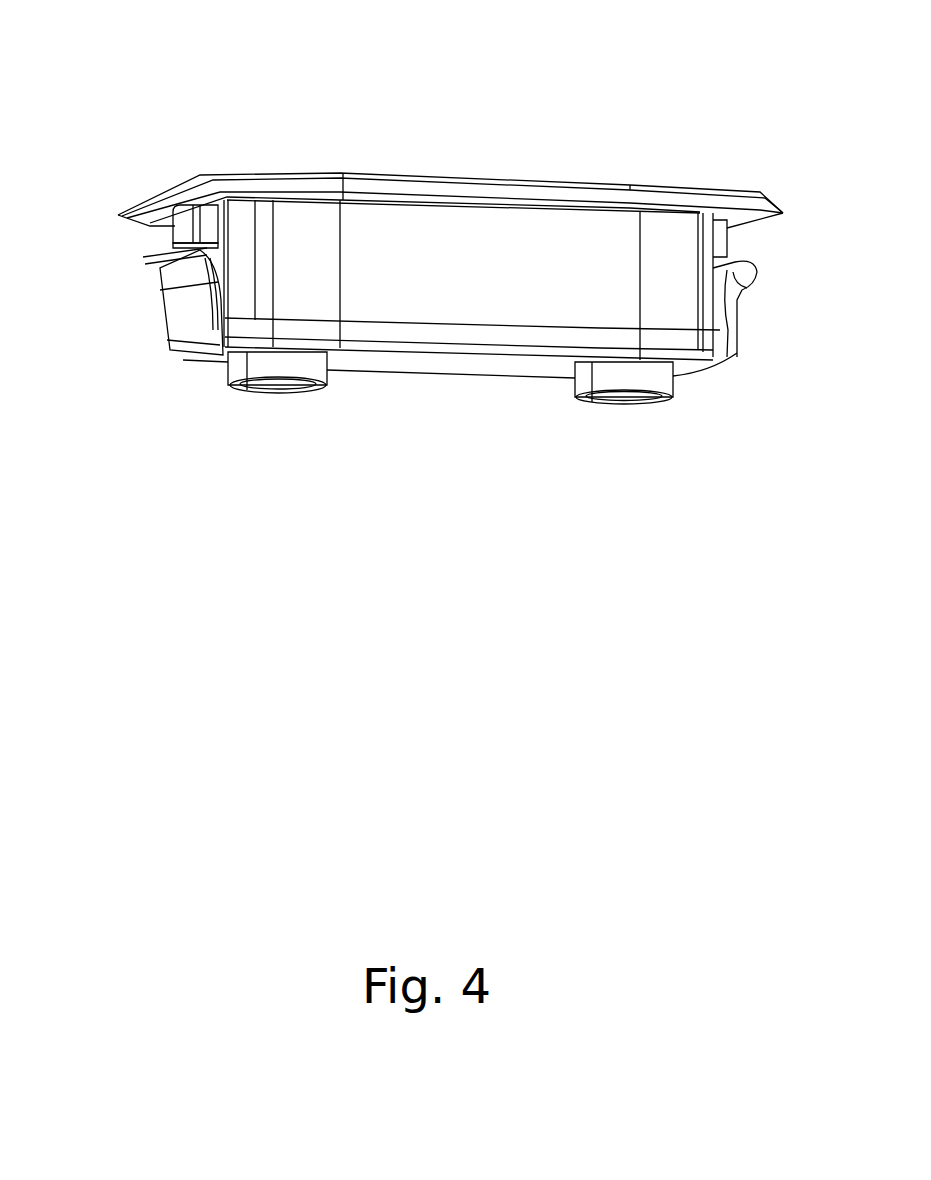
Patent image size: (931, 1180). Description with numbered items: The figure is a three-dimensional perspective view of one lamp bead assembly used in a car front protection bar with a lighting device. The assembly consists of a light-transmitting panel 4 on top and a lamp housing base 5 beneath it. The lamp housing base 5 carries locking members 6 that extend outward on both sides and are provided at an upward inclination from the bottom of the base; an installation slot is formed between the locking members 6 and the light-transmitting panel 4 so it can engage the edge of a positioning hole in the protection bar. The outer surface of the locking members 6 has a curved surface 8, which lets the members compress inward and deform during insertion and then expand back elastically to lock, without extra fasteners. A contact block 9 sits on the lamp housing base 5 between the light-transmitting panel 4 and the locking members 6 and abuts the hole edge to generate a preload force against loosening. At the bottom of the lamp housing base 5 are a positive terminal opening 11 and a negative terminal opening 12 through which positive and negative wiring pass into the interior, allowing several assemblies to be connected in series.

The light-transmitting panel 4 is at (458, 177).
The lamp housing base 5 is at (467, 310).
The locking member 6 is at (153, 265).
The curved surface 8 is at (170, 312).
The contact block 9 is at (120, 215).
The positive terminal opening 11 is at (270, 395).
The negative terminal opening 12 is at (613, 392).